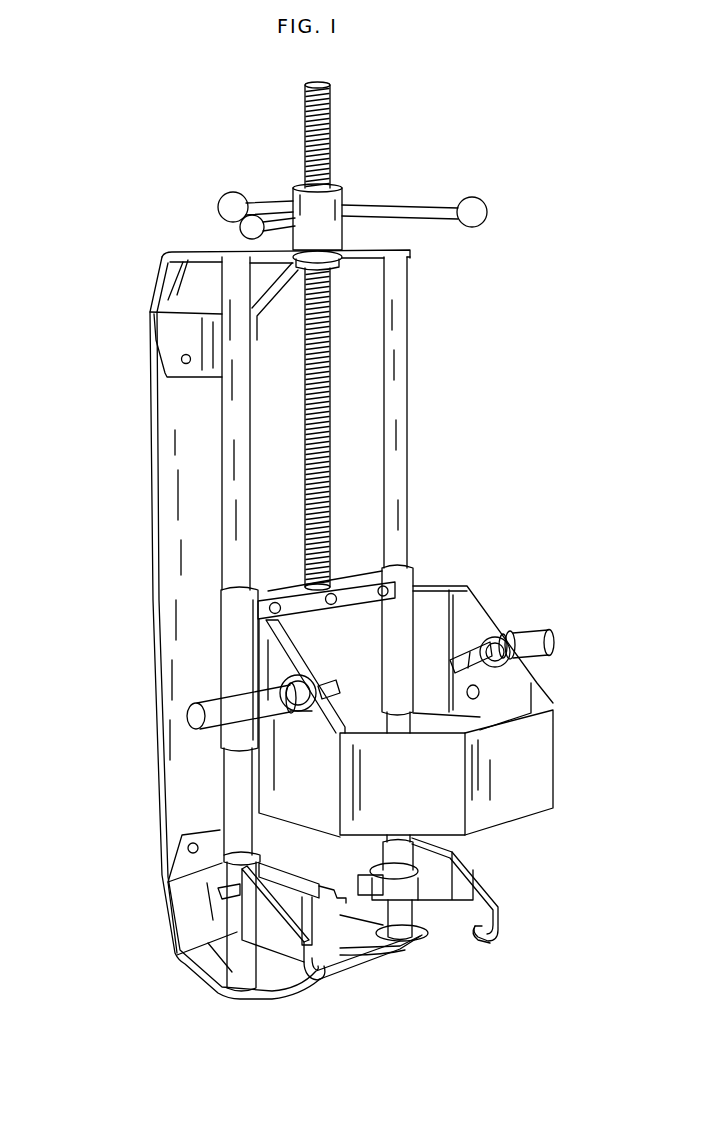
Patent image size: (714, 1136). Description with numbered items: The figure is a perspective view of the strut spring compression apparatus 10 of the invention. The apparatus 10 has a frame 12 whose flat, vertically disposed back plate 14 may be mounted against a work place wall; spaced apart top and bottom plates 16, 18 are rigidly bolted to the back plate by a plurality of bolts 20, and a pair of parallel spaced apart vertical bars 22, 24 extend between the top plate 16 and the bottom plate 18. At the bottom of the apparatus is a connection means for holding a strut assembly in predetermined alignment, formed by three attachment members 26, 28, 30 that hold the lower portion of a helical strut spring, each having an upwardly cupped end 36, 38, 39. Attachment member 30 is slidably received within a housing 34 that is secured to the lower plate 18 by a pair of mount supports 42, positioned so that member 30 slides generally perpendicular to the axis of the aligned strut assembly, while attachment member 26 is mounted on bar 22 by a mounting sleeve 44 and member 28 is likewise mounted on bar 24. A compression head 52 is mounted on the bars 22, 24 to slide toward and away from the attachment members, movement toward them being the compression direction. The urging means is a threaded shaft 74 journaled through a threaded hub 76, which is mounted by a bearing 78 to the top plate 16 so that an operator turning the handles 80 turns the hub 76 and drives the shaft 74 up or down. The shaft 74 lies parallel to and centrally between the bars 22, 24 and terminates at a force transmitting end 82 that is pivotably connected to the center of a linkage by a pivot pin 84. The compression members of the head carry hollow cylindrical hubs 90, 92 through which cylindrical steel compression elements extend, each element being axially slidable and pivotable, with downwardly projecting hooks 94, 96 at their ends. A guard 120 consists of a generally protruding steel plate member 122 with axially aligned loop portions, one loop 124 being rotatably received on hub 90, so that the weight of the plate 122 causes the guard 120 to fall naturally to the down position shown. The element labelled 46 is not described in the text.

The apparatus 10 is at (108, 652).
The frame 12 is at (155, 543).
The back plate 14 is at (156, 606).
The top plate 16 is at (200, 250).
The bottom plate 18 is at (202, 976).
The bolts 20 is at (186, 364).
The vertical bar 22 is at (222, 480).
The vertical bar 24 is at (410, 426).
The attachment member 26 is at (283, 961).
The attachment member 28 is at (490, 891).
The attachment member 30 is at (345, 888).
The housing 34 is at (315, 872).
The cupped end 36 is at (318, 986).
The cupped end 38 is at (488, 940).
The cupped end 39 is at (342, 921).
The mount supports 42 is at (318, 940).
The mounting sleeve 44 is at (222, 873).
The clamp knob 46 is at (418, 905).
The compression head 52 is at (366, 686).
The threaded shaft 74 is at (305, 506).
The threaded hub 76 is at (344, 246).
The bearing 78 is at (338, 264).
The handles 80 is at (403, 207).
The force transmitting end 82 is at (341, 586).
The pivot pin 84 is at (333, 604).
The hollow cylindrical hub 90 is at (284, 679).
The hollow cylindrical hub 92 is at (505, 636).
The hook 94 is at (332, 694).
The hook 96 is at (451, 667).
The guard 120 is at (484, 722).
The protruding plate member 122 is at (527, 808).
The loop portion 124 is at (302, 716).